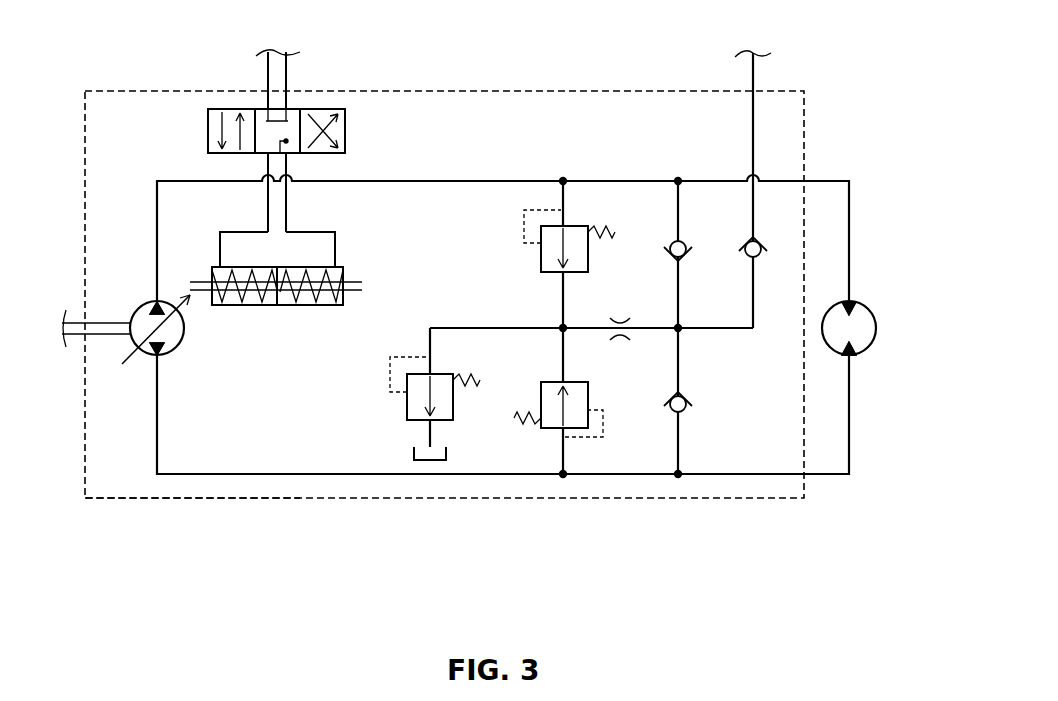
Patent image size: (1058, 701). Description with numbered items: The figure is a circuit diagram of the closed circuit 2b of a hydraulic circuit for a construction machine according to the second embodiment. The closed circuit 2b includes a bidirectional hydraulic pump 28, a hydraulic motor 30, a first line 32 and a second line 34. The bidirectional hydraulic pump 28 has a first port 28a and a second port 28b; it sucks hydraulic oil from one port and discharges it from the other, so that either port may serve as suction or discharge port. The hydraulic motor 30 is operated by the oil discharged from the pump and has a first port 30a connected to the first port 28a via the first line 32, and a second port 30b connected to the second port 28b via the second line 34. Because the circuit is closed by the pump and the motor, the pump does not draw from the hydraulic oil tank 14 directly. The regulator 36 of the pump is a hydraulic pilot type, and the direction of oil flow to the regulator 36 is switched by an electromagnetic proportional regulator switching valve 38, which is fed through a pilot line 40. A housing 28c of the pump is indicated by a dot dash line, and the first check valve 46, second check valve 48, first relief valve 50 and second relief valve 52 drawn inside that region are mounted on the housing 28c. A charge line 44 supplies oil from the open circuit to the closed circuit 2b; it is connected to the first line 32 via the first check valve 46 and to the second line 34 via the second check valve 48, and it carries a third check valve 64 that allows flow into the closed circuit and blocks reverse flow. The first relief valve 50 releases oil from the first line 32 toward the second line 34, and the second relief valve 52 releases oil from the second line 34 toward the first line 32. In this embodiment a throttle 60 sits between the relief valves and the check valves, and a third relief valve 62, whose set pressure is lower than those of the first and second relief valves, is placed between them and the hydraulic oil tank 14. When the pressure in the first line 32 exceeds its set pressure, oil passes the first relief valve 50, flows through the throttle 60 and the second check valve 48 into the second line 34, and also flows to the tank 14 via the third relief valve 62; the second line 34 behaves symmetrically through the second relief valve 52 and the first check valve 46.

The closed circuit 2b is at (70, 75).
The hydraulic oil tank 14 is at (413, 456).
The bidirectional hydraulic pump 28 is at (222, 500).
The first port 28a is at (157, 300).
The second port 28b is at (157, 357).
The housing 28c is at (145, 498).
The hydraulic motor 30 is at (878, 328).
The first port 30a is at (855, 305).
The second port 30b is at (855, 352).
The first line 32 is at (405, 183).
The second line 34 is at (306, 472).
The regulator 36 is at (322, 306).
The regulator switching valve 38 is at (346, 131).
The pilot line 40 is at (266, 72).
The charge line 44 is at (751, 72).
The first check valve 46 is at (688, 246).
The second check valve 48 is at (686, 410).
The first relief valve 50 is at (588, 273).
The second relief valve 52 is at (541, 382).
The throttle 60 is at (622, 344).
The third relief valve 62 is at (406, 407).
The third check valve 64 is at (758, 258).